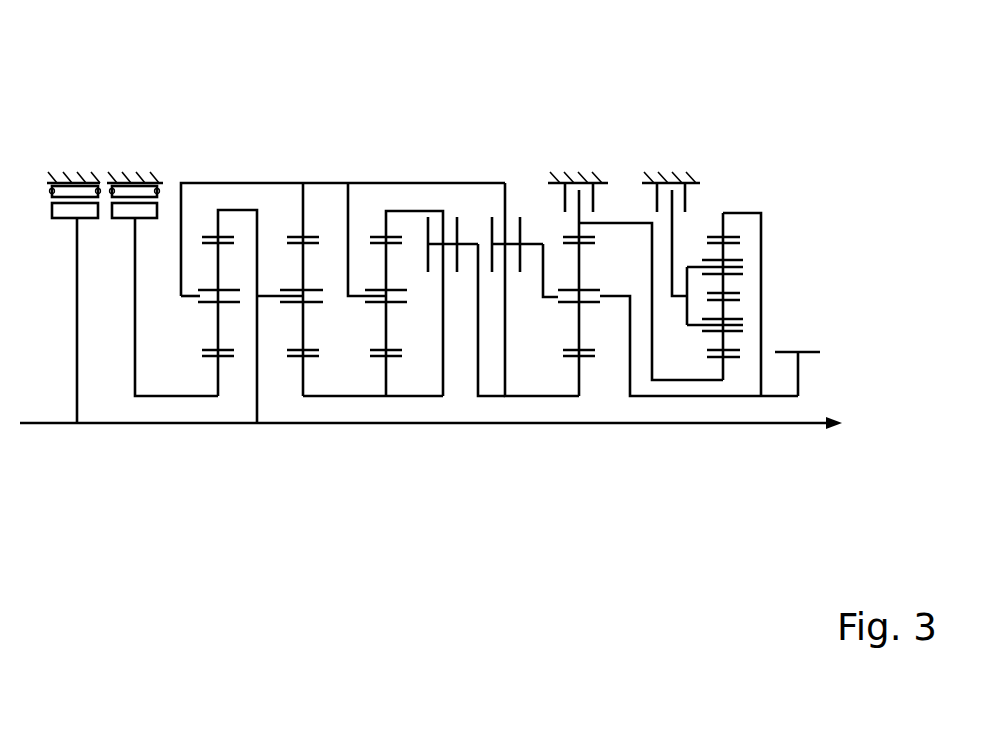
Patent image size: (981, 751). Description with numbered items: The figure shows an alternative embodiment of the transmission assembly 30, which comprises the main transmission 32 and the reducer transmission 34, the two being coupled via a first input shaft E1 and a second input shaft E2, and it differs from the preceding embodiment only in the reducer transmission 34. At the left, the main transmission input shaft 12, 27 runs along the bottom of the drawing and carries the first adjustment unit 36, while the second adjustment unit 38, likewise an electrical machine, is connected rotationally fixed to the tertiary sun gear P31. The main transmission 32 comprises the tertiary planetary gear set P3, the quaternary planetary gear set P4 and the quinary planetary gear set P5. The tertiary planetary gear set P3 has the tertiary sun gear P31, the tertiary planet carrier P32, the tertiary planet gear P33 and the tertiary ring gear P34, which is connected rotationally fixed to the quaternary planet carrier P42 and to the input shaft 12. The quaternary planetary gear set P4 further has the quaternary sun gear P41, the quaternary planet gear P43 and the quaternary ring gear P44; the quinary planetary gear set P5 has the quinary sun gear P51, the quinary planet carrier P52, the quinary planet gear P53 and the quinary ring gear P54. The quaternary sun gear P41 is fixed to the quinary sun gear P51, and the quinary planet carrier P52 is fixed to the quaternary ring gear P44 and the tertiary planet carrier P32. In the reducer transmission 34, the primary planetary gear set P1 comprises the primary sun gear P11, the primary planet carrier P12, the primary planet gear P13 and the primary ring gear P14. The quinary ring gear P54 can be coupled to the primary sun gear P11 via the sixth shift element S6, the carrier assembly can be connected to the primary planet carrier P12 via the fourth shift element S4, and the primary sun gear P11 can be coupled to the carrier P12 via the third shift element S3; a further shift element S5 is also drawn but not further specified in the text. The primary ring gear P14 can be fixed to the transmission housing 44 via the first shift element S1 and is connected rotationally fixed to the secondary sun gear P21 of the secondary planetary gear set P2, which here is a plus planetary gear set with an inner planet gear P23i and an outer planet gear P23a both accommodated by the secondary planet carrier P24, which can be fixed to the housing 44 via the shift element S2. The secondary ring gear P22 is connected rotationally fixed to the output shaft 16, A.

The main transmission input shaft 12 is at (48, 428).
The main axis of rotation 27 is at (431, 423).
The output shaft 16 is at (803, 355).
The output shaft of the reducer transmission A is at (797, 374).
The transmission assembly 30 is at (764, 195).
The main transmission 32 is at (360, 163).
The reducer transmission 34 is at (678, 148).
The first adjustment unit 36 is at (63, 165).
The second adjustment unit 38 is at (132, 165).
The transmission housing 44 is at (570, 183).
The first shift element S1 is at (599, 202).
The second shift element S2 is at (693, 202).
The third shift element S3 is at (512, 281).
The fourth shift element S4 is at (490, 206).
The shifting element S5 is at (452, 280).
The sixth shift element S6 is at (445, 203).
The first input shaft E1 is at (545, 398).
The second input shaft E2 is at (533, 240).
The primary planetary gear set P1 is at (579, 438).
The secondary planetary gear set P2 is at (723, 438).
The tertiary planetary gear set P3 is at (218, 438).
The quaternary planetary gear set P4 is at (302, 438).
The quinary planetary gear set P5 is at (386, 438).
The primary sun gear P11 is at (580, 378).
The primary planet carrier P12 is at (608, 298).
The primary planet gear P13 is at (580, 328).
The primary ring gear P14 is at (577, 232).
The secondary sun gear P21 is at (723, 370).
The secondary ring gear P22 is at (723, 227).
The outer planet gear P23a is at (723, 250).
The inner planet gear P23i is at (723, 310).
The secondary planet carrier P24 is at (687, 310).
The tertiary sun gear P31 is at (218, 375).
The tertiary planet carrier P32 is at (196, 297).
The tertiary planet gear P33 is at (220, 327).
The tertiary ring gear P34 is at (220, 228).
The quaternary sun gear P41 is at (303, 377).
The quaternary planet carrier P42 is at (278, 297).
The quaternary planet gear P43 is at (303, 268).
The quaternary ring gear P44 is at (302, 212).
The quinary sun gear P51 is at (388, 377).
The quinary planet carrier P52 is at (348, 298).
The quinary planet gear P53 is at (388, 327).
The quinary ring gear P54 is at (388, 228).